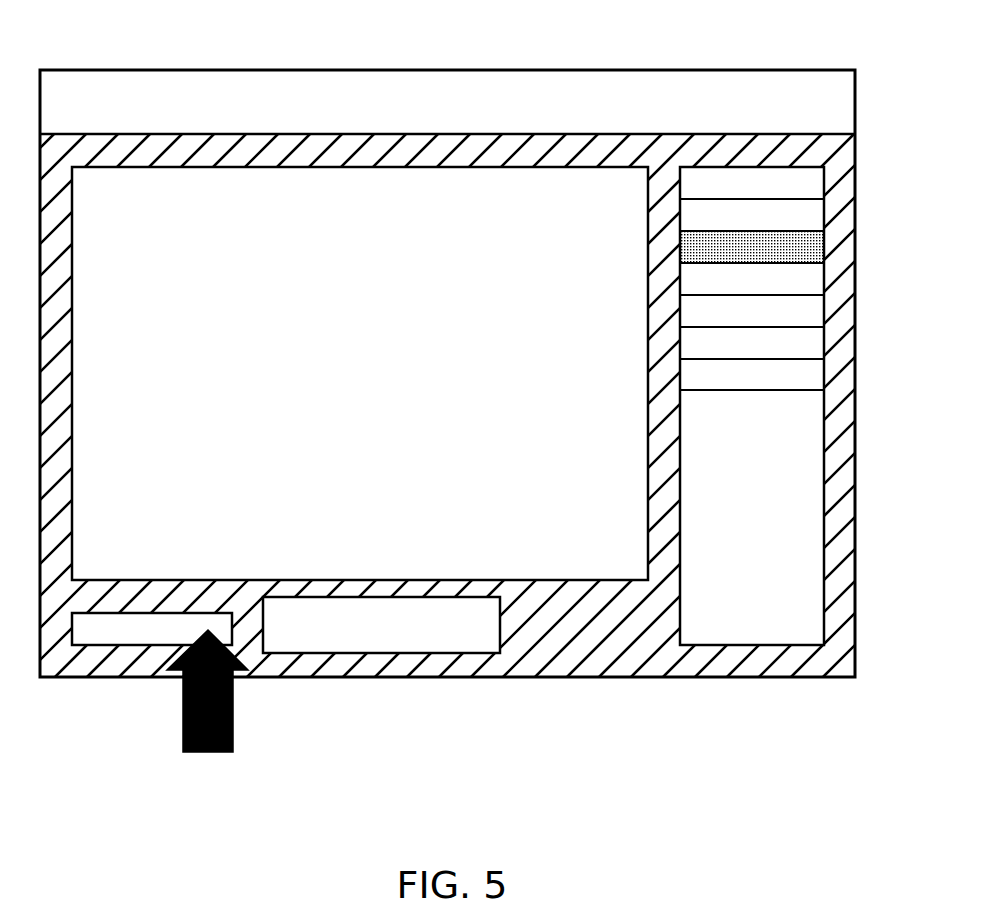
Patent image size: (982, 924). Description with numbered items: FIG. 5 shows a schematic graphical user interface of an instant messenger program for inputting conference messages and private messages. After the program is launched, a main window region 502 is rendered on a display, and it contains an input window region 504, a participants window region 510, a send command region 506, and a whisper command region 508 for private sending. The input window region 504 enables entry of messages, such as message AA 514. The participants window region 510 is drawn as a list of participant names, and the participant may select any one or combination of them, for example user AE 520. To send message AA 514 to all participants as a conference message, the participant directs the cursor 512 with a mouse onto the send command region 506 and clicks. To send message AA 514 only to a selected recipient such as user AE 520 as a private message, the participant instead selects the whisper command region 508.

The main window region 502 is at (740, 70).
The input window region 504 is at (120, 182).
The send command region 506 is at (168, 647).
The whisper command region 508 is at (355, 653).
The participants window region 510 is at (782, 506).
The cursor 512 is at (235, 732).
The message AA 514 is at (288, 186).
The user AE 520 is at (817, 248).